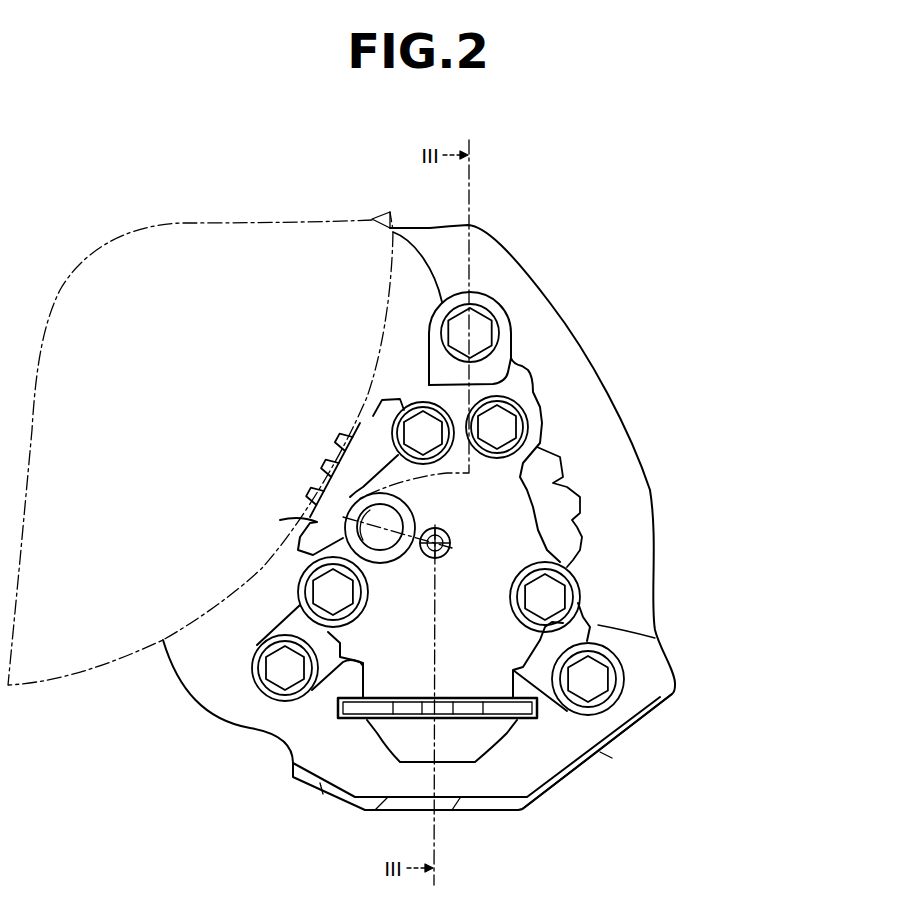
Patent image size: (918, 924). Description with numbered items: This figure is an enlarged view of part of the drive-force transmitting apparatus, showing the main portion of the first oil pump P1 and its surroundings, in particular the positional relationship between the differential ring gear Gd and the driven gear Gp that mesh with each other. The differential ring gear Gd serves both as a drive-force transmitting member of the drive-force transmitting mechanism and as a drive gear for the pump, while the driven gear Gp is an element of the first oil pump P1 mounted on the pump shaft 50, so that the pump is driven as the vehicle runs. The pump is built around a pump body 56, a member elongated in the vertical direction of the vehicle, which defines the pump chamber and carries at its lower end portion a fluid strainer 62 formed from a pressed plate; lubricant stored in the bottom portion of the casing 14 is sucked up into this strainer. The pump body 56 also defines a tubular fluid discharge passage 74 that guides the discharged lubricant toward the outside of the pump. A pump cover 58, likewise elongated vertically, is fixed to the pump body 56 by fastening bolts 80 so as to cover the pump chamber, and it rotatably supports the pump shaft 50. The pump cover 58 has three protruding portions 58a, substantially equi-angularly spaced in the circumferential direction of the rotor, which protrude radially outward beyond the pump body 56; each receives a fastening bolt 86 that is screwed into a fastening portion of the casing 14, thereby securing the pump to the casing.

The casing 14 is at (602, 751).
The pump shaft 50 is at (448, 532).
The pump body 56 is at (535, 372).
The pump cover 58 is at (518, 315).
The protruding portions 58a is at (397, 233).
The fluid strainer 62 is at (384, 756).
The fluid discharge passage 74 is at (345, 515).
The fastening bolts 80 is at (515, 415).
The fastening bolt 86 is at (477, 322).
The differential ring gear Gd is at (238, 244).
The driven gear Gp is at (556, 462).
The first oil pump P1 is at (521, 755).